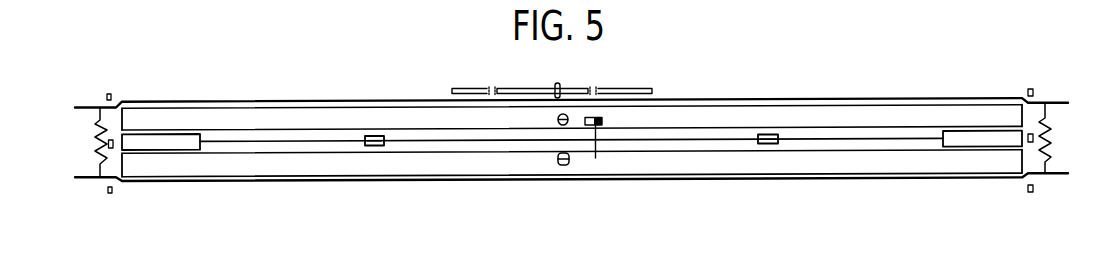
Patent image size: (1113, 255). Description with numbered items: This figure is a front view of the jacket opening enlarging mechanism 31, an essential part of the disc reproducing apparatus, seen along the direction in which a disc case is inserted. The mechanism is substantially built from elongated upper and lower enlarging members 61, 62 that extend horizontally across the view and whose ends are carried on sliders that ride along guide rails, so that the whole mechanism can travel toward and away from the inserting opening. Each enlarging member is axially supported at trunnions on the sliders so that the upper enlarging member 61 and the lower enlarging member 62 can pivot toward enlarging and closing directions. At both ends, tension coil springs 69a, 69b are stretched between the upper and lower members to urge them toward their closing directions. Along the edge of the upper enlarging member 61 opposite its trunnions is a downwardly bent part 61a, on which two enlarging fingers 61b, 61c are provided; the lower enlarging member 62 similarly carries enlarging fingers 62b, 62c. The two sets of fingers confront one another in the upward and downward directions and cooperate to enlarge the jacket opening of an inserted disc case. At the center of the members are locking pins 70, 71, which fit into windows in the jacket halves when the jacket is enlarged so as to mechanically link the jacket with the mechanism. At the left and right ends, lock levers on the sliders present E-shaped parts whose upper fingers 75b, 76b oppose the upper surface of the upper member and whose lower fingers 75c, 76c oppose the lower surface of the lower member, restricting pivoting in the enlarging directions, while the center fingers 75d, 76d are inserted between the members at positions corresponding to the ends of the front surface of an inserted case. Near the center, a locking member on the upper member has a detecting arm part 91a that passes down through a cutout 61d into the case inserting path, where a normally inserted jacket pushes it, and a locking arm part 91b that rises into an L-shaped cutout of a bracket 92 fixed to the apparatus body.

The jacket opening enlarging mechanism 31 is at (736, 72).
The upper enlarging member 61 is at (888, 98).
The downwardly bent part 61a is at (258, 134).
The enlarging finger 61b is at (373, 137).
The enlarging finger 61c is at (772, 134).
The cutout 61d is at (604, 122).
The lower enlarging member 62 is at (882, 178).
The enlarging finger 62b is at (375, 147).
The enlarging finger 62c is at (770, 145).
The tension coil spring 69a is at (94, 130).
The tension coil spring 69b is at (1052, 128).
The locking pin 70 is at (558, 119).
The locking pin 71 is at (558, 159).
The upper finger 75b is at (110, 93).
The lower finger 75c is at (107, 187).
The center finger 75d is at (97, 152).
The upper finger 76b is at (1031, 88).
The lower finger 76c is at (1035, 191).
The center finger 76d is at (1036, 142).
The detecting arm part 91a is at (596, 158).
The locking arm part 91b is at (558, 83).
The bracket 92 is at (527, 88).